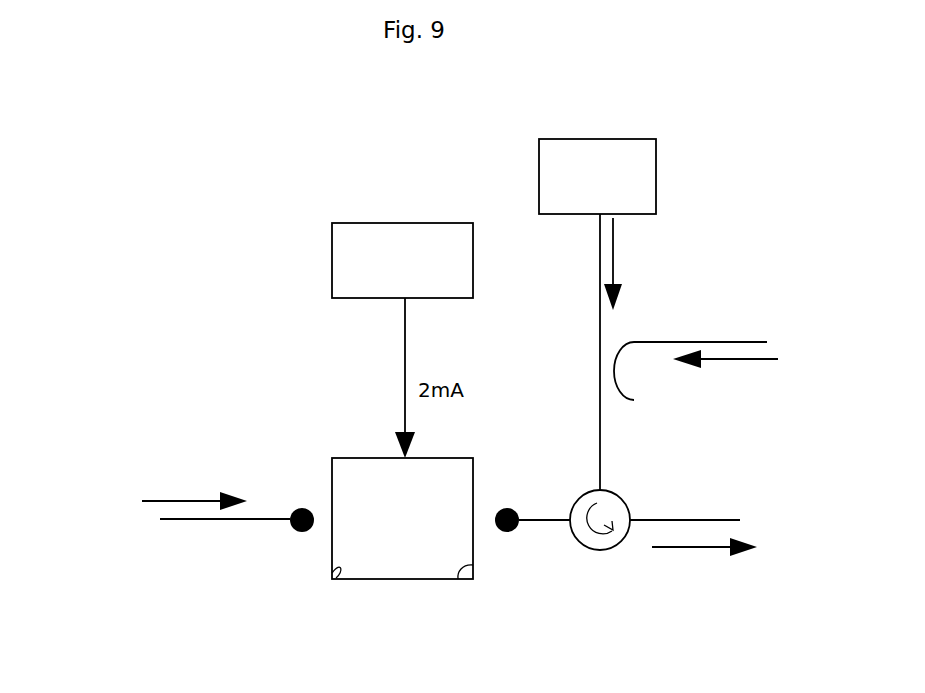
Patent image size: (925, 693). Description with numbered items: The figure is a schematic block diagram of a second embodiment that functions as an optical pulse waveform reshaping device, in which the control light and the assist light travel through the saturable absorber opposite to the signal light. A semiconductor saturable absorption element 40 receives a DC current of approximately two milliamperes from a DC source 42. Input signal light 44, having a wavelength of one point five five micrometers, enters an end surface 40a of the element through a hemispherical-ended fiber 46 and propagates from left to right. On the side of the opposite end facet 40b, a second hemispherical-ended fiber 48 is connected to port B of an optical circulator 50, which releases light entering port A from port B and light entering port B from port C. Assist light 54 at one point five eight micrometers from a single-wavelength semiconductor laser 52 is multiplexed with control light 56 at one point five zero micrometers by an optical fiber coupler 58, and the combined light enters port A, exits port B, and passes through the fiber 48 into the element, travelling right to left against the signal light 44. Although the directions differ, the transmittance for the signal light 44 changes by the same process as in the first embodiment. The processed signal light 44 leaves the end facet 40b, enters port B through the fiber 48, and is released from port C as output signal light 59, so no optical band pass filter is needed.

The semiconductor saturable absorption element 40 is at (397, 572).
The end surface 40a is at (332, 573).
The end facet 40b is at (455, 577).
The DC source 42 is at (407, 235).
The input signal light 44 is at (203, 498).
The hemispherical-ended fiber 46 is at (288, 537).
The hemispherical-ended fiber 48 is at (513, 500).
The optical circulator 50 is at (599, 543).
The single-wavelength semiconductor laser 52 is at (597, 153).
The assist light 54 is at (694, 264).
The control light 56 is at (757, 361).
The optical fiber coupler 58 is at (625, 362).
The output signal light 59 is at (700, 549).